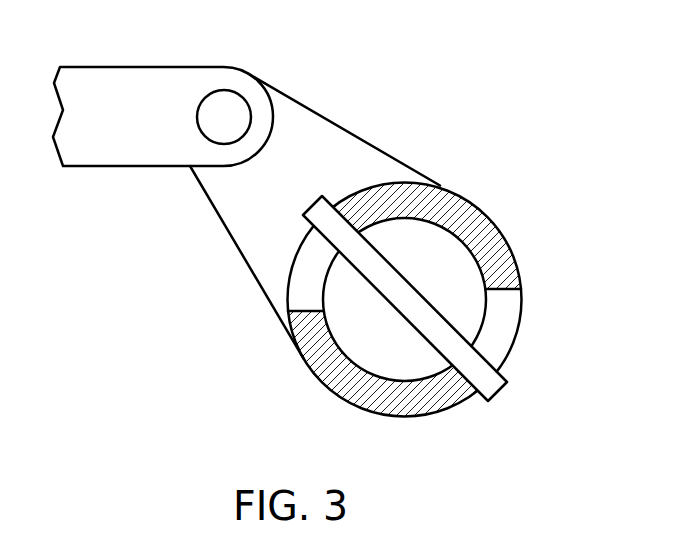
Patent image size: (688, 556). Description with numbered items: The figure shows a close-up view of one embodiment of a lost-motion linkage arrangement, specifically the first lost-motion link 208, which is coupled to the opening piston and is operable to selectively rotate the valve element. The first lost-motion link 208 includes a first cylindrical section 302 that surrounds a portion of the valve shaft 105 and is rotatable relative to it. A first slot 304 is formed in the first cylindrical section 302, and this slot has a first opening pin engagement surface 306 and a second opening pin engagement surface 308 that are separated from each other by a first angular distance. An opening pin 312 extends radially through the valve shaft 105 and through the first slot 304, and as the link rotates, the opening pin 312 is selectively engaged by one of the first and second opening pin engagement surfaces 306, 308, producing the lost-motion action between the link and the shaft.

The first lost-motion link 208 is at (550, 99).
The first cylindrical section 302 is at (492, 214).
The first slot 304 is at (282, 273).
The first opening pin engagement surface 306 is at (343, 212).
The second opening pin engagement surface 308 is at (303, 312).
The opening pin 312 is at (508, 381).
The valve shaft 105 is at (457, 278).